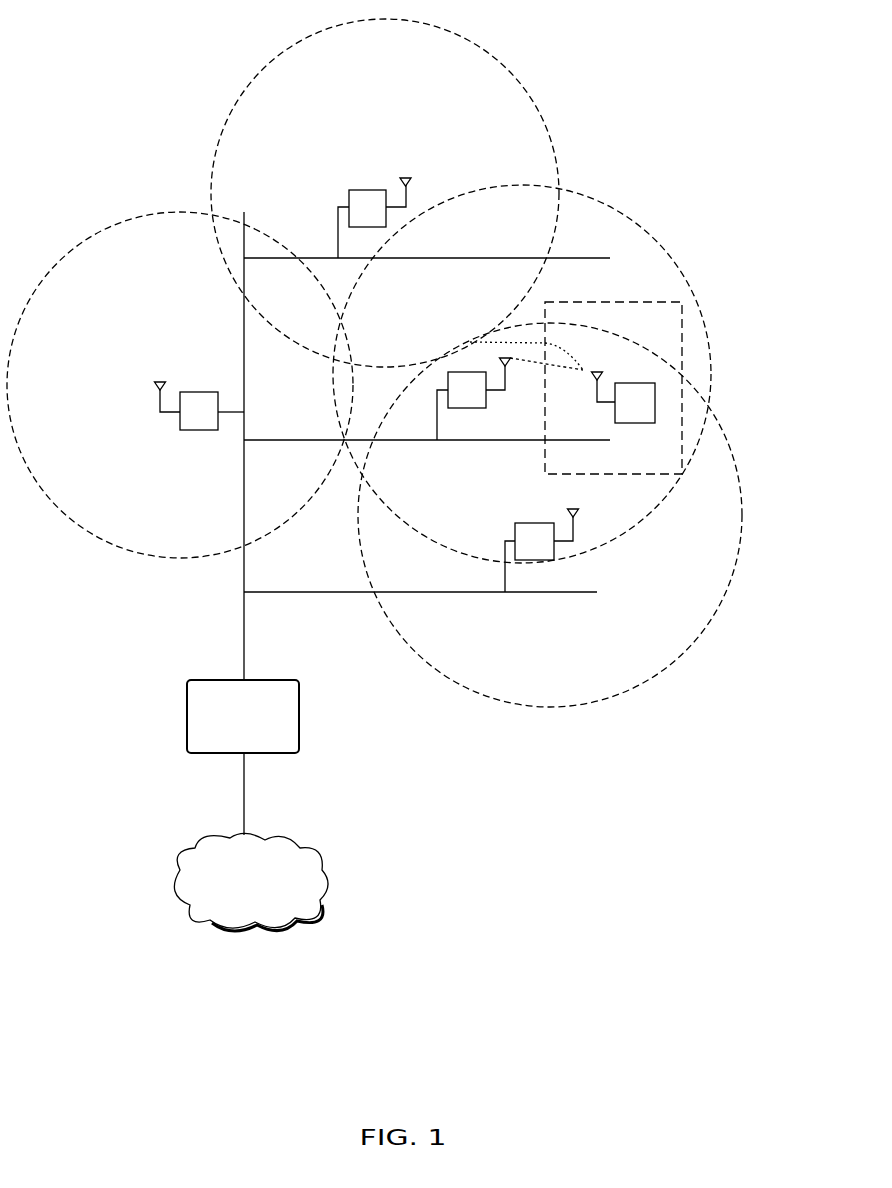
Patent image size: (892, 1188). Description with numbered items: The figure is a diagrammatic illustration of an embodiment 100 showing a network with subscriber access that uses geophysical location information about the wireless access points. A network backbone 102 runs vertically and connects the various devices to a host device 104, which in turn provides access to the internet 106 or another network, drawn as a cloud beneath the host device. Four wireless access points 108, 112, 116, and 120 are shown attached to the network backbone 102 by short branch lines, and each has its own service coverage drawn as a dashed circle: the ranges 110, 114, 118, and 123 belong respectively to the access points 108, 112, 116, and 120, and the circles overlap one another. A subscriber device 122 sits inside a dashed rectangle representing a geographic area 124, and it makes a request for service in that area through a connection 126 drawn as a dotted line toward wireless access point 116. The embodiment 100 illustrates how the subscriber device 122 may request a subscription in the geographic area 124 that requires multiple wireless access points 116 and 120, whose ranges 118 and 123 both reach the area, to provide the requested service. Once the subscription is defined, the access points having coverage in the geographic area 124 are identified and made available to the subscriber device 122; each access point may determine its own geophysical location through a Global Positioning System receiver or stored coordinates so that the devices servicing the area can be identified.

The embodiment 100 is at (667, 897).
The network backbone 102 is at (244, 640).
The host device 104 is at (299, 733).
The internet 106 is at (323, 878).
The wireless access point 108 is at (180, 430).
The range 110 is at (127, 220).
The wireless access point 112 is at (382, 190).
The range 114 is at (253, 83).
The wireless access point 116 is at (484, 408).
The range 118 is at (560, 197).
The wireless access point 120 is at (554, 550).
The subscriber device 122 is at (640, 383).
The range 123 is at (667, 668).
The geographic area 124 is at (666, 302).
The connection 126 is at (470, 342).